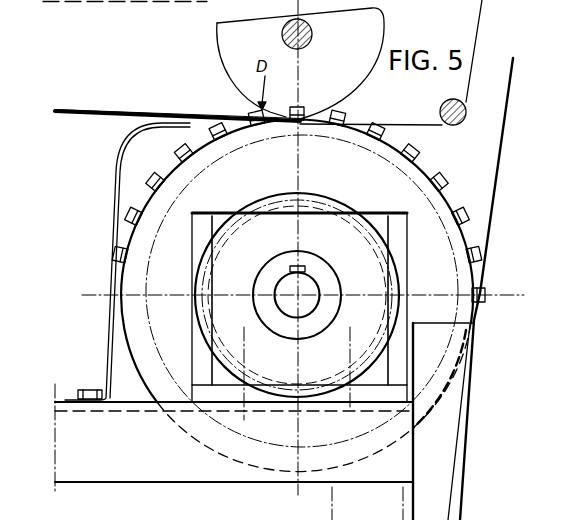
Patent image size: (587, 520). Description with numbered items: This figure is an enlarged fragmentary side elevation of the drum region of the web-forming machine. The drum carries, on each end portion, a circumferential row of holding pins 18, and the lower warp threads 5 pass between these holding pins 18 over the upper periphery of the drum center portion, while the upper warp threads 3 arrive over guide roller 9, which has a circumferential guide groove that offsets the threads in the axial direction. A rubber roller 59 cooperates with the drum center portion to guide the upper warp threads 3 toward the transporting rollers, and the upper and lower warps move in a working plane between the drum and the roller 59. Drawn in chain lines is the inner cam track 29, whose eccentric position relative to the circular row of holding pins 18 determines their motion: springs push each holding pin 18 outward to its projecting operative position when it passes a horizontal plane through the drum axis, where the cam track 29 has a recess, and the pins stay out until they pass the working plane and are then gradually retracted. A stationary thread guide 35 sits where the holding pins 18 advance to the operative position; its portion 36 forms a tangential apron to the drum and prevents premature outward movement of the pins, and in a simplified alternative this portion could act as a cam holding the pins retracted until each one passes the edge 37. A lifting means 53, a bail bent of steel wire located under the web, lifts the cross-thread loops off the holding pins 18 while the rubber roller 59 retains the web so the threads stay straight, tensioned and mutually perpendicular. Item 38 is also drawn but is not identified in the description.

The upper warp threads 3 is at (93, 112).
The lower warp threads 5 is at (90, 117).
The guide roller 9 is at (466, 110).
The holding pins 18 is at (166, 174).
The inner cam track 29 is at (156, 338).
The stationary thread guide 35 is at (439, 472).
The portion of guide 36 is at (474, 373).
The edge 37 is at (476, 322).
The belt edge 38 is at (108, 112).
The lifting means 53 is at (113, 187).
The rubber roller 59 is at (243, 63).